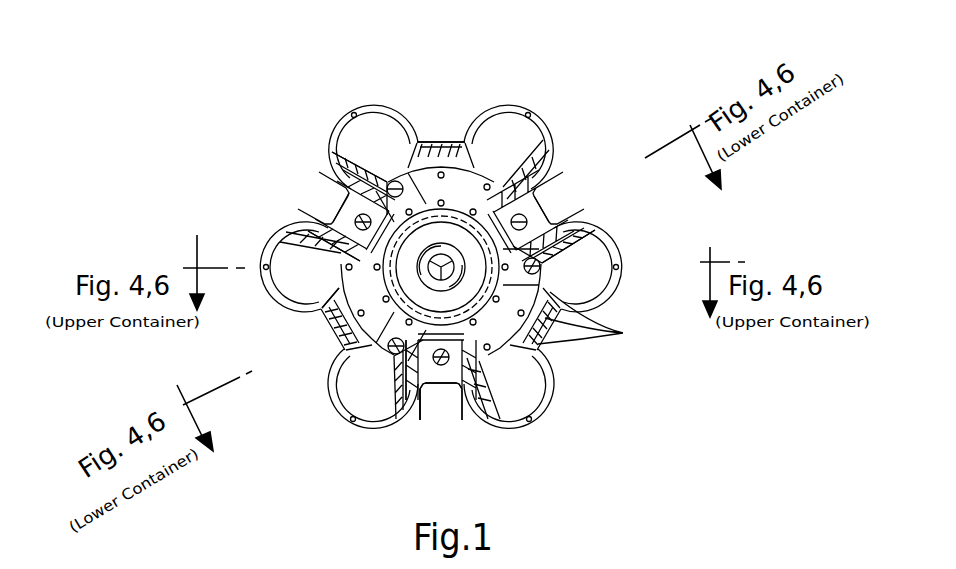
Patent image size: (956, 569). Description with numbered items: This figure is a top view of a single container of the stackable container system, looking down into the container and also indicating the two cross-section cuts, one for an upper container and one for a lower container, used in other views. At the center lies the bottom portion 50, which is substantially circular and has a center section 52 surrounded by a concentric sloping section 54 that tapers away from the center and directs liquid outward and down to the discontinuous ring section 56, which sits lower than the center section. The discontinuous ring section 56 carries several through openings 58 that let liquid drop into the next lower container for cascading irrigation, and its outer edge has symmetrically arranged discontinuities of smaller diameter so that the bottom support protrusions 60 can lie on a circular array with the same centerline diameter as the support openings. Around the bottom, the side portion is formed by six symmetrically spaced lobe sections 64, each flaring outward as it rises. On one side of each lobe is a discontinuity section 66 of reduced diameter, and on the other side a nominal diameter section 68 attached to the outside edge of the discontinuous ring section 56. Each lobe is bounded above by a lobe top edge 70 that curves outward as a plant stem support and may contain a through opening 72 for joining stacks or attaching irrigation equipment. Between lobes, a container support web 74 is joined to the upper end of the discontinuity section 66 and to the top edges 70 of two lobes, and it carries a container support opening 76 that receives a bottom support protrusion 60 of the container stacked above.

The bottom portion 50 is at (420, 178).
The bottom portion center section 52 is at (330, 305).
The bottom portion concentric sloping section 54 is at (428, 268).
The bottom portion discontinuous ring section 56 is at (377, 335).
The bottom-portion discontinuous ring section through openings 58 is at (605, 331).
The bottom support protrusions 60 is at (346, 183).
The container side portion lobe section 64 is at (382, 130).
The container side portion discontinuity section 66 is at (290, 258).
The container side portion nominal diameter section 68 is at (430, 163).
The container side portion lobe top edge 70 is at (478, 140).
The container side portion lobe top edge through opening 72 is at (351, 115).
The container support web 74 is at (336, 228).
The container support opening 76 is at (355, 219).